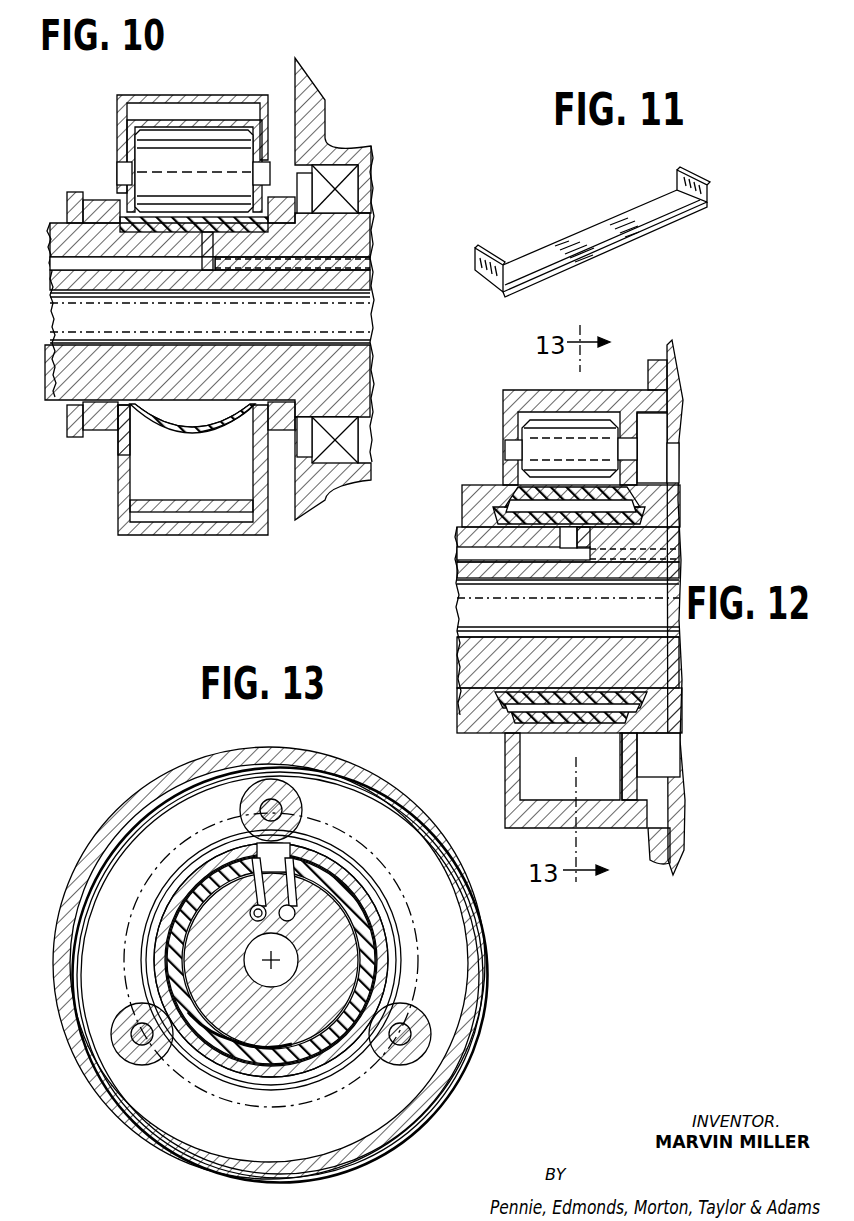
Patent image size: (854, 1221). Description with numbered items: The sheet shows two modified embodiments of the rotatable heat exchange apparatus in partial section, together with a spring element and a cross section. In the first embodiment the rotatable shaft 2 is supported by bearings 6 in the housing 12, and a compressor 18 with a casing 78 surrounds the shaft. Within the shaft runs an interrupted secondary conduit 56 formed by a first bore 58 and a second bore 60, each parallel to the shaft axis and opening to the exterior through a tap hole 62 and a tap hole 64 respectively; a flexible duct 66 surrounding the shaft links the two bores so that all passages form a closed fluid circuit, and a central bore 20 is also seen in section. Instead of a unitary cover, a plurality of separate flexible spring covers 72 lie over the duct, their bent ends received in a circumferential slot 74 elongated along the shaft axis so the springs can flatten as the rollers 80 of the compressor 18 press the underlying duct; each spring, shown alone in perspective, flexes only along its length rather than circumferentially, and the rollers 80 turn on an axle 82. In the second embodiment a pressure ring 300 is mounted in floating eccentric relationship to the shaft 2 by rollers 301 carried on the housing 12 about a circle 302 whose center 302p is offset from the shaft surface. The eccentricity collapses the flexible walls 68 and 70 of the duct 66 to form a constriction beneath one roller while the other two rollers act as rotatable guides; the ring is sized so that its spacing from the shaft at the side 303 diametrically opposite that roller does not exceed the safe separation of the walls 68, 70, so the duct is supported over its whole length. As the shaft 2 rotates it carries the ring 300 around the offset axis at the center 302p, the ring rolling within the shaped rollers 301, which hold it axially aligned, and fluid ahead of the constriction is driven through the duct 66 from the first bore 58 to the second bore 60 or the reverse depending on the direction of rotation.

In FIG. 10, the rotatable shaft 2 is at (357, 234).
In FIG. 12, the rotatable shaft 2 is at (470, 658).
In FIG. 13, the rotatable shaft 2 is at (203, 947).
In FIG. 10, the bearings 6 is at (352, 188).
In FIG. 10, the housing 12 is at (313, 98).
In FIG. 12, the housing 12 is at (680, 382).
In FIG. 13, the housing 12 is at (408, 810).
In FIG. 10, the compressor 18 is at (180, 90).
In FIG. 10, the shaft bore 20 is at (362, 307).
In FIG. 12, the shaft bore 20 is at (480, 589).
In FIG. 10, the secondary conduit 56 is at (139, 270).
In FIG. 12, the secondary conduit 56 is at (462, 555).
In FIG. 13, the first bore 58 is at (340, 926).
In FIG. 10, the second bore 60 is at (370, 277).
In FIG. 12, the second bore 60 is at (679, 540).
In FIG. 13, the second bore 60 is at (250, 913).
In FIG. 10, the tap hole 62 is at (186, 262).
In FIG. 12, the tap hole 62 is at (565, 552).
In FIG. 13, the tap hole 62 is at (298, 885).
In FIG. 13, the tap hole 64 is at (240, 890).
In FIG. 10, the flexible duct 66 is at (187, 416).
In FIG. 13, the flexible duct 66 is at (340, 882).
In FIG. 10, the flexible wall 68 is at (118, 449).
In FIG. 12, the flexible wall 68 is at (563, 722).
In FIG. 13, the flexible wall 68 is at (228, 1055).
In FIG. 10, the flexible wall 70 is at (225, 428).
In FIG. 12, the flexible wall 70 is at (590, 718).
In FIG. 13, the flexible wall 70 is at (242, 1057).
In FIG. 10, the flexible spring cover 72 is at (158, 214).
In FIG. 11, the flexible spring cover 72 is at (587, 253).
In FIG. 10, the circumferential slot 74 is at (280, 193).
In FIG. 10, the casing 78 is at (153, 535).
In FIG. 10, the rollers 80 is at (205, 143).
In FIG. 10, the roller axle 82 is at (117, 170).
In FIG. 12, the roller axle 82 is at (513, 448).
In FIG. 12, the pressure ring 300 is at (513, 725).
In FIG. 13, the pressure ring 300 is at (380, 905).
In FIG. 12, the rollers 301 is at (547, 432).
In FIG. 13, the rollers 301 is at (128, 1064).
In FIG. 13, the circle 302 is at (445, 980).
In FIG. 13, the center 302p is at (275, 963).
In FIG. 13, the side 303 is at (275, 1068).